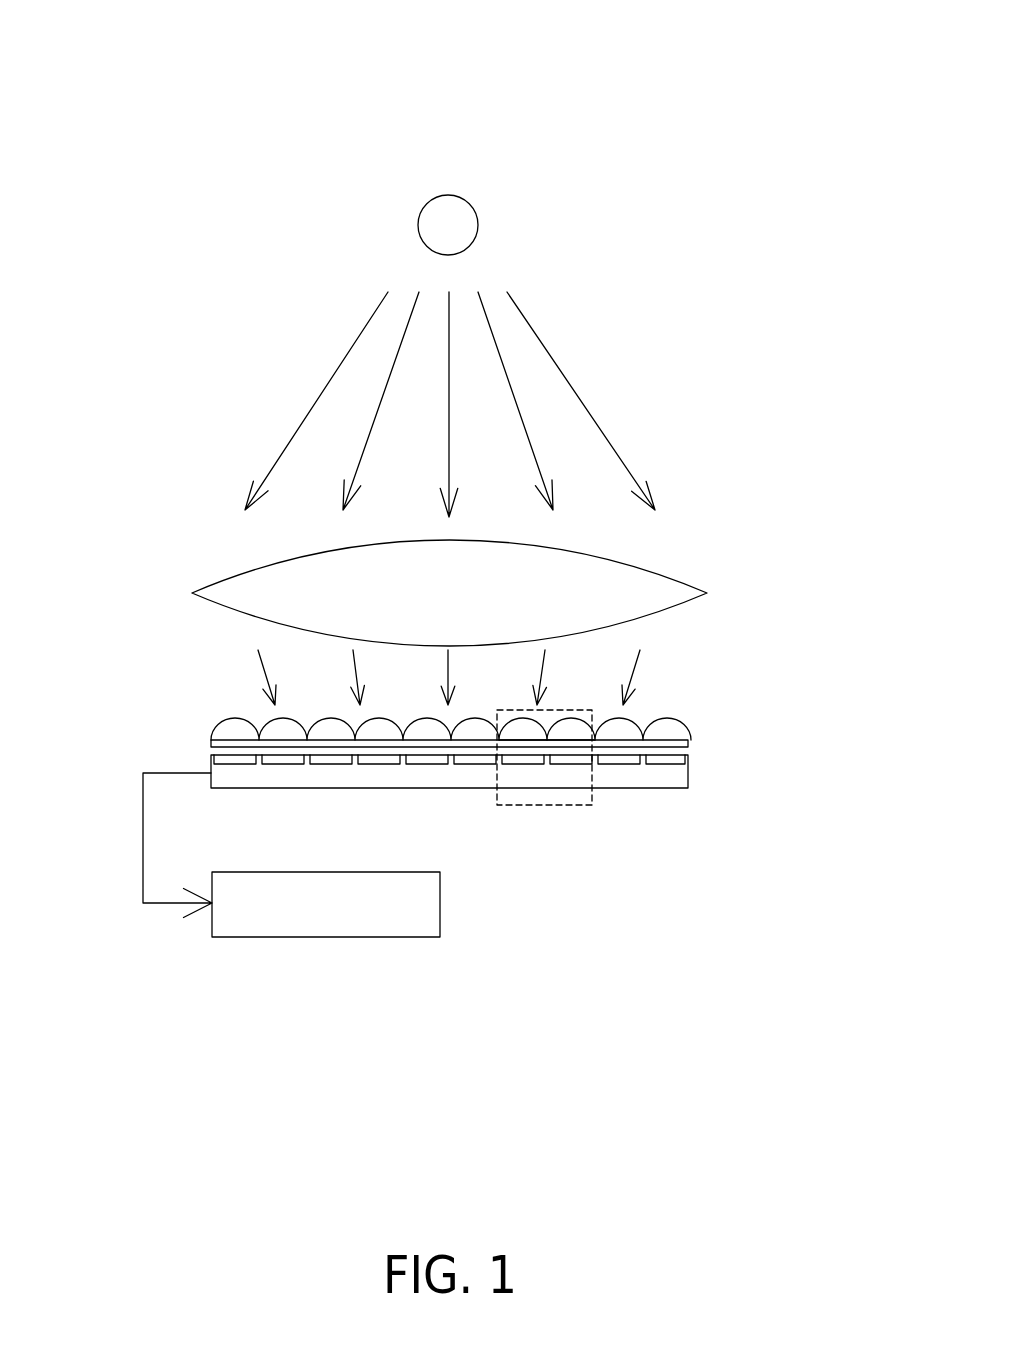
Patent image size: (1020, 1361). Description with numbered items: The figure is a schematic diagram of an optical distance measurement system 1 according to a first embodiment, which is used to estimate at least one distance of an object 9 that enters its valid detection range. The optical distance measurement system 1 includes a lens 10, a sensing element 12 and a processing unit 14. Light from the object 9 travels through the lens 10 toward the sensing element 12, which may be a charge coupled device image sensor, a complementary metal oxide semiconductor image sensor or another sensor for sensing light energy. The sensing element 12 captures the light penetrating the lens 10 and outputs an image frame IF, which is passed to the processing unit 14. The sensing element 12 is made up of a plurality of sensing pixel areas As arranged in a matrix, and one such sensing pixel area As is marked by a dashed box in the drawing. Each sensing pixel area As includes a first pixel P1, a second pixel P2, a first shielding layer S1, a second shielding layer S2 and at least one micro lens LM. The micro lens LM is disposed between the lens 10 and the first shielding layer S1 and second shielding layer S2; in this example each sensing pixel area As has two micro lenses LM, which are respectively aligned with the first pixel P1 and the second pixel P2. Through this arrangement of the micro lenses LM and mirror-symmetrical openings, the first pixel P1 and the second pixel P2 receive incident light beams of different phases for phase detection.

The optical distance measurement system 1 is at (318, 128).
The object 9 is at (477, 213).
The lens 10 is at (228, 580).
The sensing element 12 is at (493, 777).
The micro lens LM is at (520, 718).
The first shielding layer S1 is at (522, 747).
The second shielding layer S2 is at (568, 747).
The first pixel P1 is at (520, 765).
The second pixel P2 is at (567, 765).
The sensing pixel area As is at (546, 807).
The image frame IF is at (156, 845).
The processing unit 14 is at (283, 937).